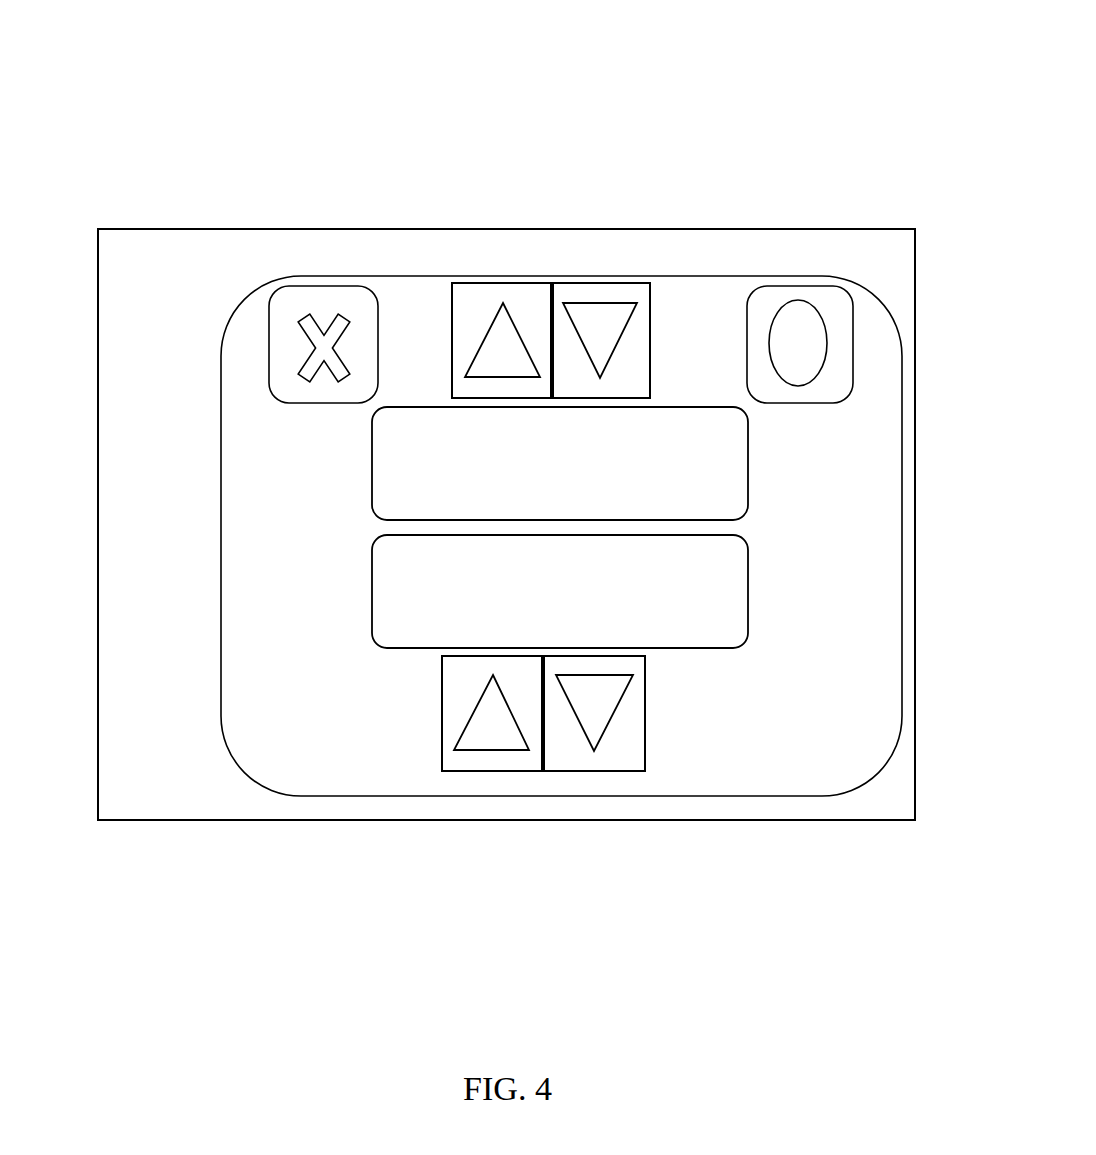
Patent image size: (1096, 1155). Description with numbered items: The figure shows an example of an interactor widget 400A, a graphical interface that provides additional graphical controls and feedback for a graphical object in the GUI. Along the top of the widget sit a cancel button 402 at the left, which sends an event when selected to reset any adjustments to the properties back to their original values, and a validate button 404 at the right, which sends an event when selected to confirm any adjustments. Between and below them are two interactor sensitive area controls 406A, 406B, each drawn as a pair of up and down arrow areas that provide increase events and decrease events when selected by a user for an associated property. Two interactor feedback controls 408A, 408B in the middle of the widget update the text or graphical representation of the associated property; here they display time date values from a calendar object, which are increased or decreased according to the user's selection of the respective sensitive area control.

The interactor widget 400A is at (507, 515).
The cancel button 402 is at (323, 286).
The validate button 404 is at (798, 286).
The interactor sensitive area control 406A is at (550, 283).
The interactor sensitive area control 406B is at (547, 771).
The interactor feedback control 408A is at (372, 465).
The interactor feedback control 408B is at (748, 598).